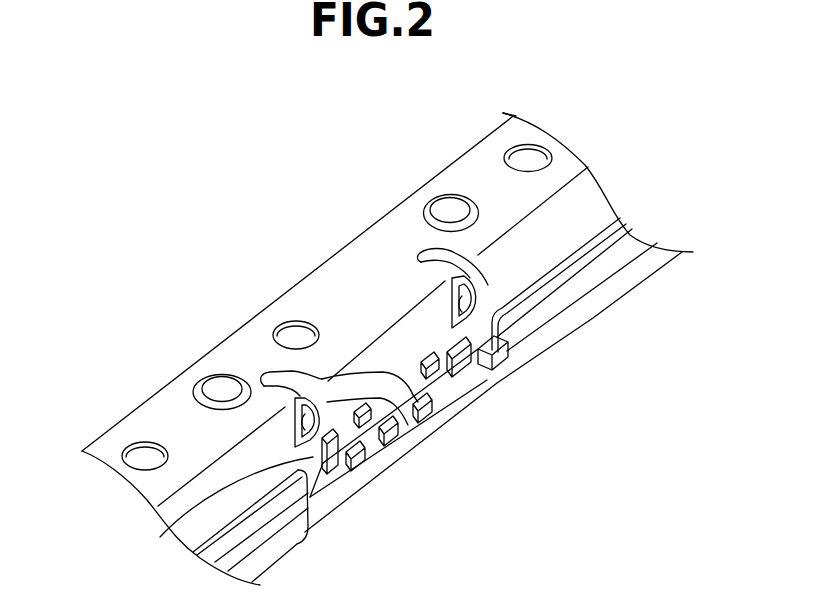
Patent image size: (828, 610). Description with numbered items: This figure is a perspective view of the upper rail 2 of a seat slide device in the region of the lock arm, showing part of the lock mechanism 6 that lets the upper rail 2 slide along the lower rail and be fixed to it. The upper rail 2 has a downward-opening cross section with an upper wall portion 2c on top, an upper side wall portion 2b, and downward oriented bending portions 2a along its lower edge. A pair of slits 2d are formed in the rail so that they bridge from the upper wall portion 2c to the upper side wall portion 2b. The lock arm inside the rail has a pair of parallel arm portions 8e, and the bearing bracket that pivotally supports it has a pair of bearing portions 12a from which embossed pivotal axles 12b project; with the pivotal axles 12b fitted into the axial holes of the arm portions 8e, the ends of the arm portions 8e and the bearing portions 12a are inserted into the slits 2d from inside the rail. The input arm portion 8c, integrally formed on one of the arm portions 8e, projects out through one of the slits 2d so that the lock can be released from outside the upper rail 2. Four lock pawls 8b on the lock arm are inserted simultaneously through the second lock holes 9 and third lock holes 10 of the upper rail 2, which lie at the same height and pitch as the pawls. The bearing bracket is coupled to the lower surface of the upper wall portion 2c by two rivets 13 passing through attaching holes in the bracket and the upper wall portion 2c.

The upper rail 2 is at (137, 403).
The downward oriented bending portions 2a is at (592, 305).
The upper side wall portion 2b is at (563, 233).
The upper wall portion 2c is at (560, 173).
The slits 2d is at (452, 276).
The lock mechanism 6 is at (446, 444).
The lock pawls 8b is at (356, 455).
The input arm portion 8c is at (383, 371).
The arm portions 8e is at (430, 254).
The second lock holes 9 is at (178, 530).
The third lock holes 10 is at (351, 479).
The bearing portions 12a is at (483, 279).
The pivotal axles 12b is at (467, 302).
The rivets 13 is at (450, 203).